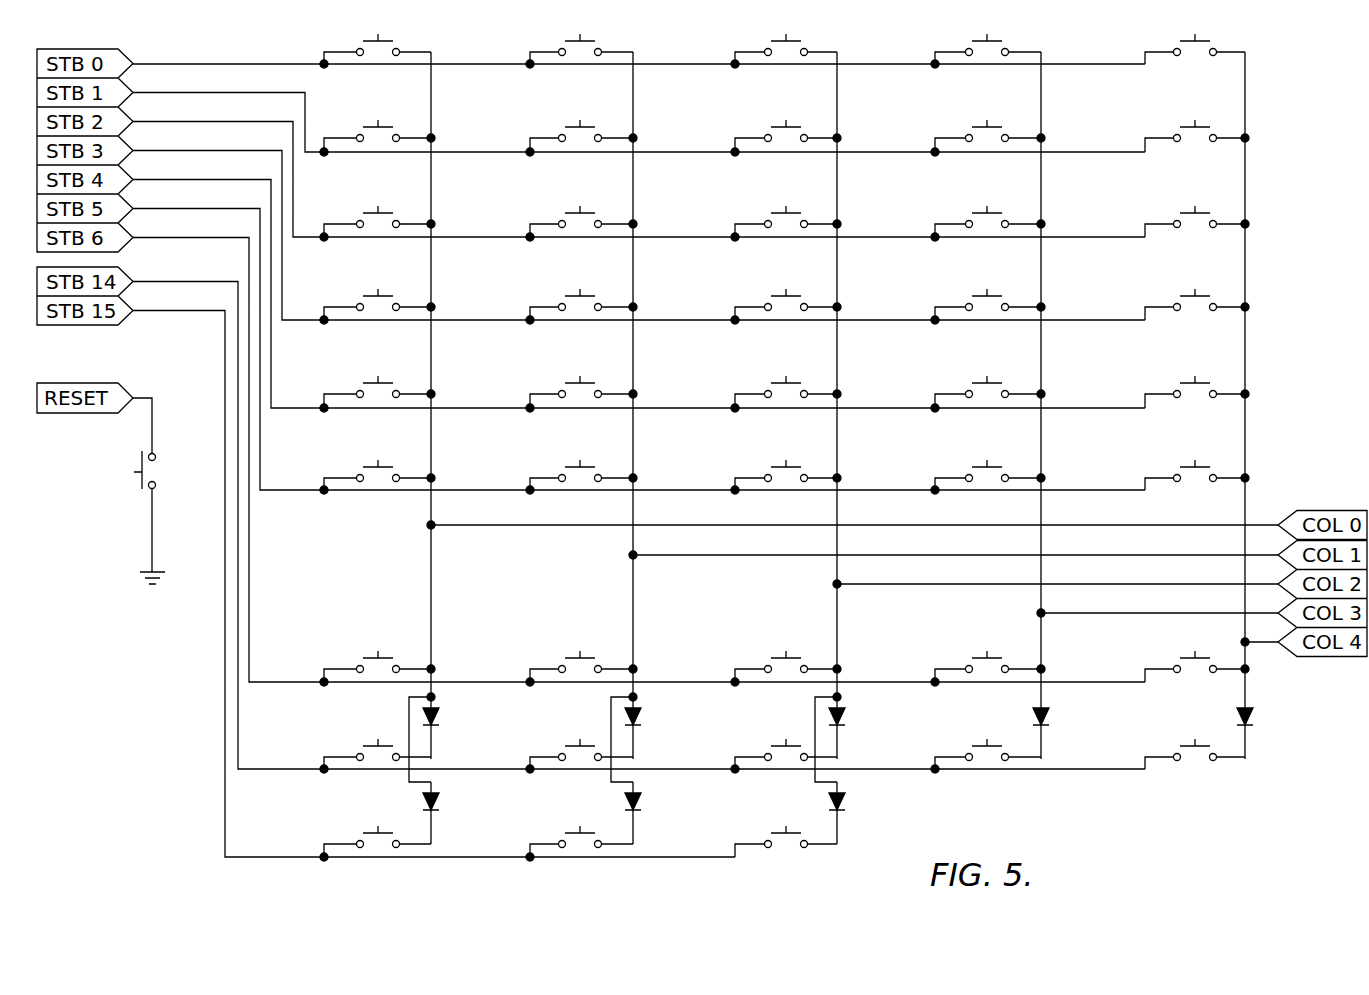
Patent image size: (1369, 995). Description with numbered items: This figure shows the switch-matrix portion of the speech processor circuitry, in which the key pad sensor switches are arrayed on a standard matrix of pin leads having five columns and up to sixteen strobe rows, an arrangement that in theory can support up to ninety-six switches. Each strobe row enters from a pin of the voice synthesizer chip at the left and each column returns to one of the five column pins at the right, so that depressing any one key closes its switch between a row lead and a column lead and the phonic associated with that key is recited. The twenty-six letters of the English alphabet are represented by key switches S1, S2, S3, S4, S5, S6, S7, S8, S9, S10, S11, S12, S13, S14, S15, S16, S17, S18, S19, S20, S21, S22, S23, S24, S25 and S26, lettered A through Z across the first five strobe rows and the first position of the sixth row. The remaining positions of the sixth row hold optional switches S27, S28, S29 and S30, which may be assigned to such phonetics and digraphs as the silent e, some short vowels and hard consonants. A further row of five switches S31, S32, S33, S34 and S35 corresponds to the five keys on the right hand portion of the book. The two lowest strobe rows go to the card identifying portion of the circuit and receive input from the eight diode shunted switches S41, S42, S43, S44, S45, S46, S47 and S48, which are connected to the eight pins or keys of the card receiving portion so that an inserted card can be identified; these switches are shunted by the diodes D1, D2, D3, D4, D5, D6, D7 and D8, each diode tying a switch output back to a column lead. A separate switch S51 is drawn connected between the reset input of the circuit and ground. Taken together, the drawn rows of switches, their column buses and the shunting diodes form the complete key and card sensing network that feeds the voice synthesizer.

The switch S1 is at (378, 52).
The switch S2 is at (580, 52).
The switch S3 is at (786, 52).
The switch S4 is at (987, 52).
The switch S5 is at (1195, 52).
The switch S6 is at (378, 139).
The switch S7 is at (580, 139).
The switch S8 is at (786, 139).
The switch S9 is at (987, 139).
The switch S10 is at (1195, 139).
The switch S11 is at (378, 224).
The switch S12 is at (580, 224).
The switch S13 is at (786, 224).
The switch S14 is at (987, 224).
The switch S15 is at (1195, 224).
The switch S16 is at (378, 307).
The switch S17 is at (580, 307).
The switch S18 is at (786, 307).
The switch S19 is at (987, 307).
The switch S20 is at (1195, 307).
The switch S21 is at (378, 395).
The switch S22 is at (580, 395).
The switch S23 is at (786, 395).
The switch S24 is at (987, 395).
The switch S25 is at (1195, 395).
The switch S26 is at (378, 478).
The switch S27 is at (580, 478).
The switch S28 is at (786, 478).
The switch S29 is at (987, 478).
The switch S30 is at (1195, 478).
The switch S31 is at (378, 669).
The switch S32 is at (580, 669).
The switch S33 is at (786, 669).
The switch S34 is at (987, 669).
The switch S35 is at (1195, 669).
The switch S41 is at (378, 757).
The switch S42 is at (580, 757).
The switch S43 is at (786, 757).
The switch S44 is at (987, 757).
The switch S45 is at (1195, 757).
The switch S46 is at (378, 844).
The switch S47 is at (580, 844).
The switch S48 is at (786, 844).
The switch S51 is at (175, 491).
The diode D1 is at (463, 723).
The diode D2 is at (665, 723).
The diode D3 is at (869, 723).
The diode D4 is at (1073, 723).
The diode D5 is at (1277, 723).
The diode D6 is at (463, 809).
The diode D7 is at (665, 809).
The diode D8 is at (869, 809).